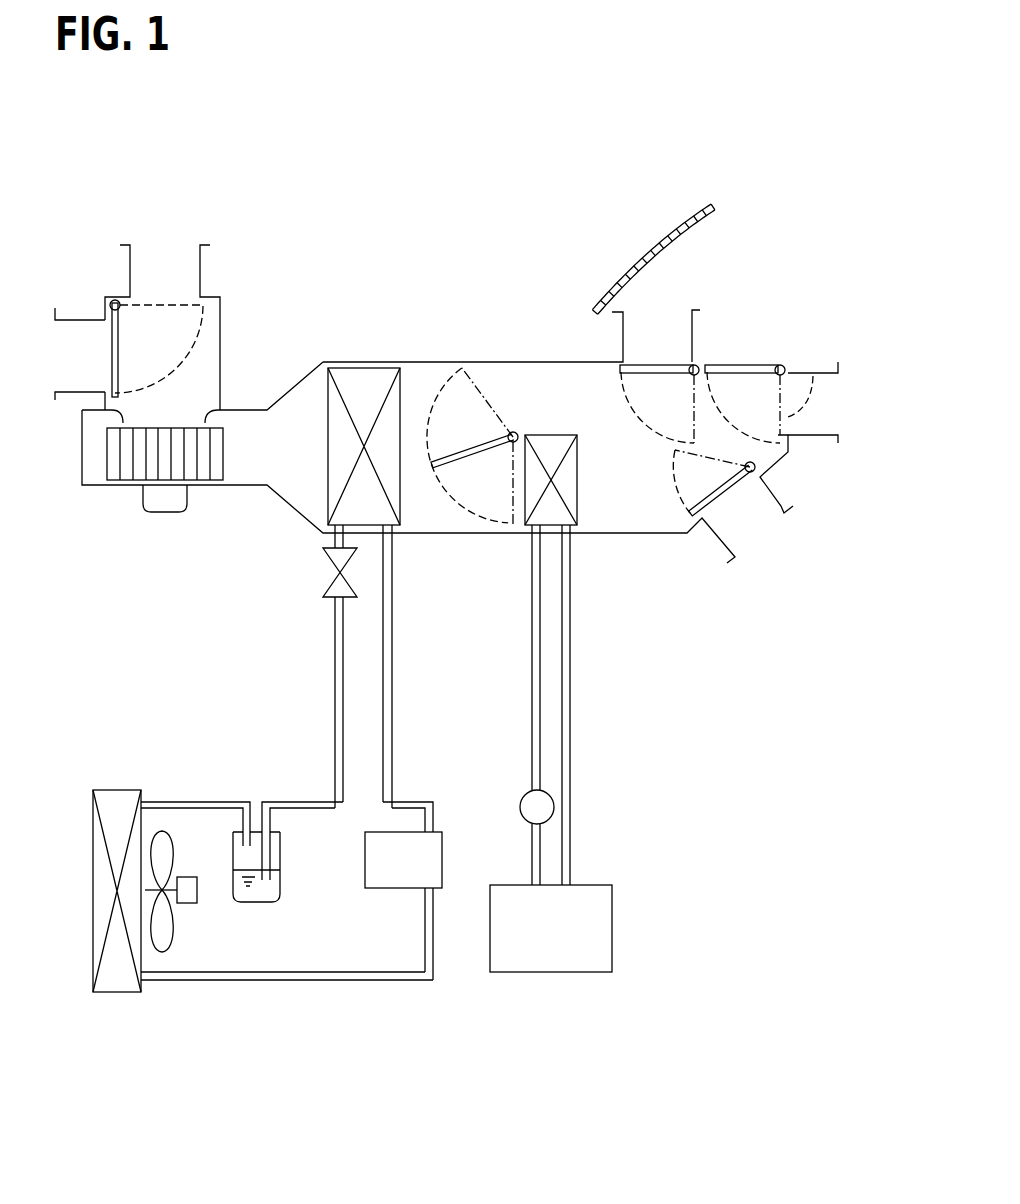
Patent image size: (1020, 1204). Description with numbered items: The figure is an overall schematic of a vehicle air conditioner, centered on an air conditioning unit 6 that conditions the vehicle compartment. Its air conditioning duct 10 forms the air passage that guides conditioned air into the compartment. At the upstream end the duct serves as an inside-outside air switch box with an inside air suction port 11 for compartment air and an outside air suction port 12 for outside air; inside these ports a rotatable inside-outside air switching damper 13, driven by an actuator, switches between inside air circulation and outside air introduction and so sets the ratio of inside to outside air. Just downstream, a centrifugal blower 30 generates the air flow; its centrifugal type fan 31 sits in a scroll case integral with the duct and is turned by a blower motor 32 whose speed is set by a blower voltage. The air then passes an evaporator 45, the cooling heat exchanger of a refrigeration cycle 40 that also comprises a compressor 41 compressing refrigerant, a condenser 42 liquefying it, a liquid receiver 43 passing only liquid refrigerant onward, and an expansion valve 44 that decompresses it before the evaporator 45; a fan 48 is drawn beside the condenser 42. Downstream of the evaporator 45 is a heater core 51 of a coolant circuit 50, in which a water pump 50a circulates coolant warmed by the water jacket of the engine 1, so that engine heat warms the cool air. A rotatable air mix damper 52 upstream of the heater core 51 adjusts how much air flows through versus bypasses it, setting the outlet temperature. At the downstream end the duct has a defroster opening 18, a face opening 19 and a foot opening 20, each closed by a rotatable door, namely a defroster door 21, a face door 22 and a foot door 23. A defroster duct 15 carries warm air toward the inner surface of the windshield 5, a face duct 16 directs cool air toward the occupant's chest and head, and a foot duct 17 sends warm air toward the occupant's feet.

The engine 1 is at (555, 972).
The windshield 5 is at (675, 232).
The air conditioning unit 6 is at (423, 242).
The air conditioning duct 10 is at (497, 360).
The inside air suction port 11 is at (72, 347).
The outside air suction port 12 is at (163, 258).
The inside-outside air switching damper 13 is at (110, 372).
The defroster duct 15 is at (623, 333).
The face duct 16 is at (822, 435).
The foot duct 17 is at (788, 508).
The defroster opening 18 is at (647, 353).
The face opening 19 is at (812, 373).
The foot opening 20 is at (730, 500).
The defroster door 21 is at (660, 365).
The face door 22 is at (753, 362).
The foot door 23 is at (717, 497).
The blower 30 is at (123, 520).
The centrifugal type fan 31 is at (110, 460).
The blower motor 32 is at (167, 512).
The refrigeration cycle 40 is at (198, 783).
The compressor 41 is at (390, 888).
The condenser 42 is at (112, 993).
The liquid receiver 43 is at (260, 903).
The expansion valve 44 is at (323, 562).
The evaporator 45 is at (350, 365).
The cooling fan 48 is at (160, 952).
The coolant circuit 50 is at (576, 710).
The water pump 50a is at (528, 810).
The heater core 51 is at (577, 487).
The air mix damper 52 is at (468, 460).